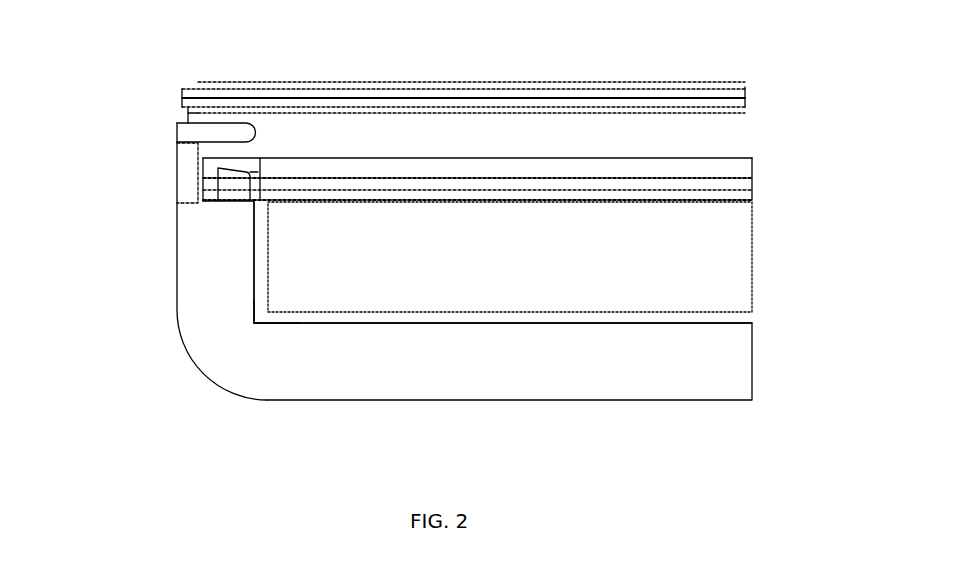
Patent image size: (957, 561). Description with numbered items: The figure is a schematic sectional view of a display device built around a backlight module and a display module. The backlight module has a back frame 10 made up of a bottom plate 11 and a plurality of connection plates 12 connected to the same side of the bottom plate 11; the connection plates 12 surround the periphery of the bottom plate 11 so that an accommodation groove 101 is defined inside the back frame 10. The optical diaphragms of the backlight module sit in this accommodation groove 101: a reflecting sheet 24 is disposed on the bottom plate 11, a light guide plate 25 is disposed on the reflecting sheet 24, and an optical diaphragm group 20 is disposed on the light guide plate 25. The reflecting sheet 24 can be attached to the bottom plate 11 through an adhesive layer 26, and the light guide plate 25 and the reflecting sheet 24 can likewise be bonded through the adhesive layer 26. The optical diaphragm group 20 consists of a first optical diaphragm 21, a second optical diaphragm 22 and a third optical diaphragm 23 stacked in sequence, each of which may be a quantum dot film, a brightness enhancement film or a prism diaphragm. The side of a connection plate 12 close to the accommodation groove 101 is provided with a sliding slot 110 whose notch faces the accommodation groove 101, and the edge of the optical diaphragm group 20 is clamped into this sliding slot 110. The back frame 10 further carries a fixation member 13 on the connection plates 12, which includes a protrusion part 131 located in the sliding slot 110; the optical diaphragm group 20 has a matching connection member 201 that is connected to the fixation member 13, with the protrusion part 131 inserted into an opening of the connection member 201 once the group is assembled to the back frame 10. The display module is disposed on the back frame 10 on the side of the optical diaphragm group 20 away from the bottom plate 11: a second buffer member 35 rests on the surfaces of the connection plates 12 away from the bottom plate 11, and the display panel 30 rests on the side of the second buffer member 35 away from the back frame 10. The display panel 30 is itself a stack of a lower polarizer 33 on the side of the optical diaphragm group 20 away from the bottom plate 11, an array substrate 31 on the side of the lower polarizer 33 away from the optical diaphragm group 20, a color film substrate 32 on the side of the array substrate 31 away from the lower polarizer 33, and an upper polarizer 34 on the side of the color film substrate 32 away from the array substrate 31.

The back frame 10 is at (396, 294).
The bottom plate 11 is at (530, 363).
The connection plate 12 is at (205, 285).
The fixation member 13 is at (145, 182).
The protrusion part 131 is at (232, 184).
The sliding slot 110 is at (215, 150).
The accommodation groove 101 is at (262, 237).
The adhesive layer 26 is at (283, 318).
The second buffer member 35 is at (186, 119).
The display panel 30 is at (487, 79).
The upper polarizer 34 is at (740, 85).
The color film substrate 32 is at (740, 88).
The array substrate 31 is at (748, 99).
The lower polarizer 33 is at (740, 112).
The optical diaphragm group 20 is at (537, 122).
The third optical diaphragm 23 is at (738, 169).
The second optical diaphragm 22 is at (745, 183).
The first optical diaphragm 21 is at (742, 199).
The connection member 201 is at (254, 170).
The light guide plate 25 is at (640, 278).
The reflecting sheet 24 is at (713, 318).